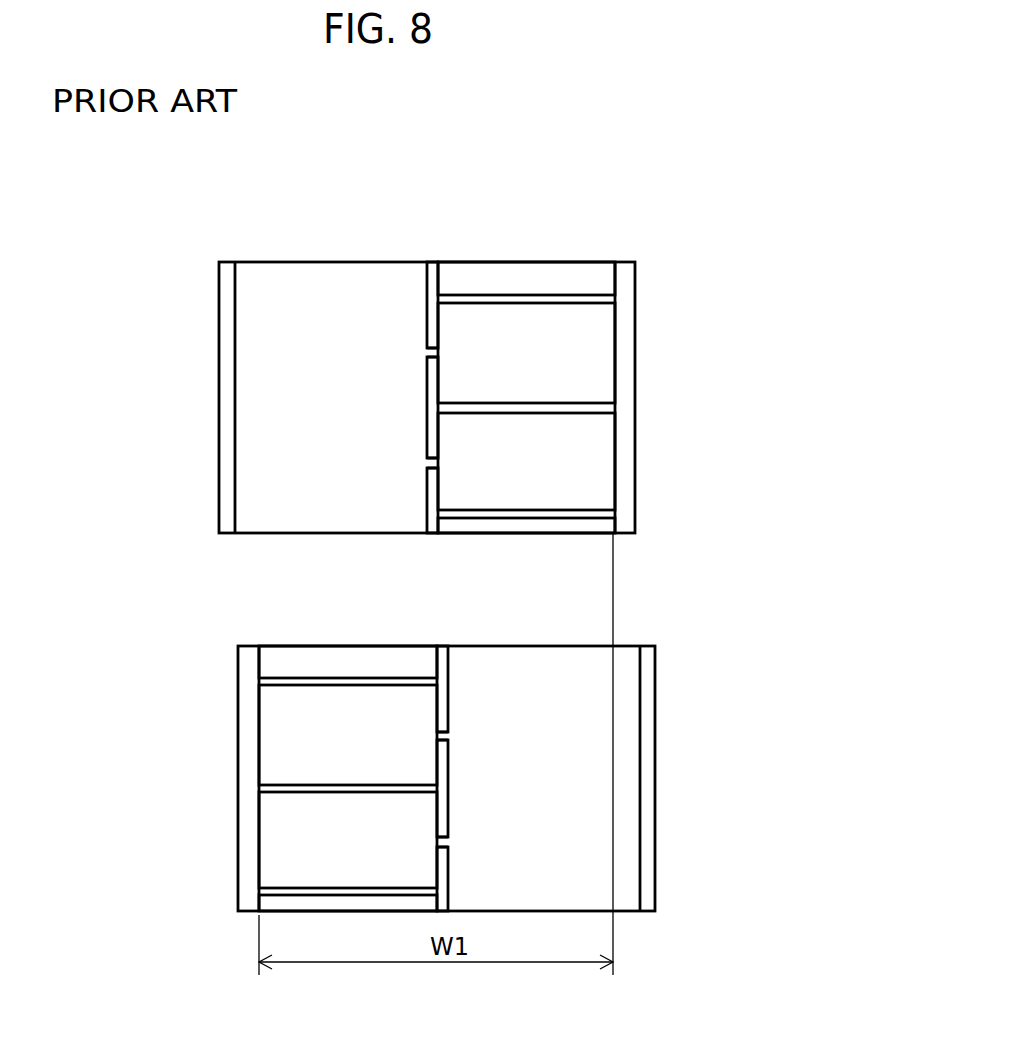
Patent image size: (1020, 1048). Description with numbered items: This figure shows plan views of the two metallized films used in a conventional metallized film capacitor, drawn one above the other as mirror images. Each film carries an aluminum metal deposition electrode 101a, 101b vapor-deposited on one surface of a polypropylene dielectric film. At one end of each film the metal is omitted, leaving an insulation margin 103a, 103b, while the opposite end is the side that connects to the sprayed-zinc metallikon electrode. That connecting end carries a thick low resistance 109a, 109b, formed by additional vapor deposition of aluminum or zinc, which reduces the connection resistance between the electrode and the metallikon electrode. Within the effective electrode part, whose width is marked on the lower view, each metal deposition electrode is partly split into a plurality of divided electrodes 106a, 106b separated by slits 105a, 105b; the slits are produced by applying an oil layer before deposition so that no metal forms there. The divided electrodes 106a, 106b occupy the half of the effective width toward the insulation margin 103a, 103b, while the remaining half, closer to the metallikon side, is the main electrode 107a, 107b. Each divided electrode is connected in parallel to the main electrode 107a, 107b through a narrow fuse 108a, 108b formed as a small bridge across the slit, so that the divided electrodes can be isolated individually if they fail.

The metal deposition electrode 101a is at (312, 280).
The insulation margin 103a is at (623, 282).
The slits 105a is at (523, 244).
The divided electrodes 106a is at (604, 418).
The main electrode 107a is at (382, 282).
The fuse 108a is at (269, 408).
The low resistance 109a is at (228, 330).
The metal deposition electrode 101b is at (530, 668).
The insulation margin 103b is at (247, 667).
The slits 105b is at (348, 629).
The divided electrodes 106b is at (276, 798).
The main electrode 107b is at (484, 665).
The fuse 108b is at (608, 789).
The low resistance 109b is at (645, 732).